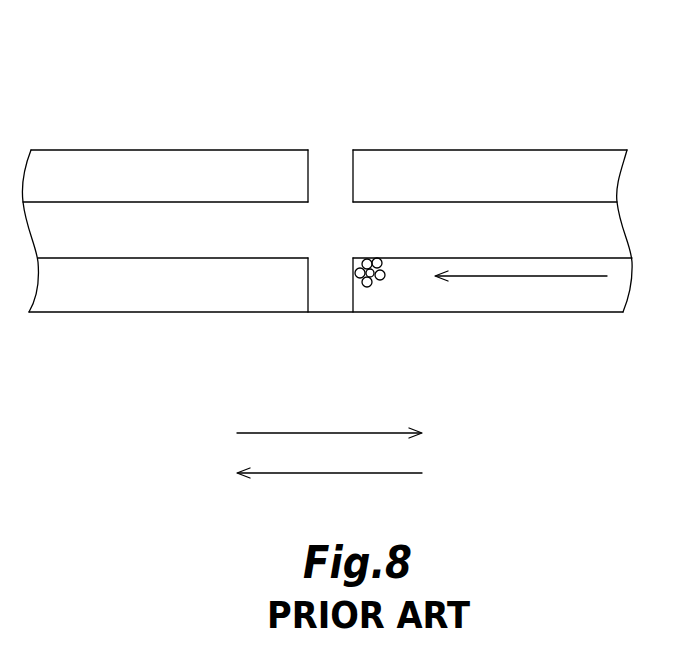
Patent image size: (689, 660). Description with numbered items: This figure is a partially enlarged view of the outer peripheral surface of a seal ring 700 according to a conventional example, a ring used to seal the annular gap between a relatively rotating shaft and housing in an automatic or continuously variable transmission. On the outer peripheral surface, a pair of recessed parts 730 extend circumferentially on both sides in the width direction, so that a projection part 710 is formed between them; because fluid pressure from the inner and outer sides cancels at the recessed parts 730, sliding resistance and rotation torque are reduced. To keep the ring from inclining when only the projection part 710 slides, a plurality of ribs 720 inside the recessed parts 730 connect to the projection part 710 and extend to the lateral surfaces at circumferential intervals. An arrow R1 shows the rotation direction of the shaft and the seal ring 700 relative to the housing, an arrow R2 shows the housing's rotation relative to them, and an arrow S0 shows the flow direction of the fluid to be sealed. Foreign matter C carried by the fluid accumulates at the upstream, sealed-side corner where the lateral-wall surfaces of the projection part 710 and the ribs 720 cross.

The seal ring 700 is at (575, 123).
The projection part 710 is at (99, 228).
The ribs 720 is at (320, 177).
The recessed parts 730 is at (88, 295).
The foreign matter C is at (375, 287).
The flow direction of fluid to be sealed S0 is at (521, 289).
The rotation direction of shaft and seal ring R1 is at (329, 420).
The rotation direction of housing R2 is at (329, 487).